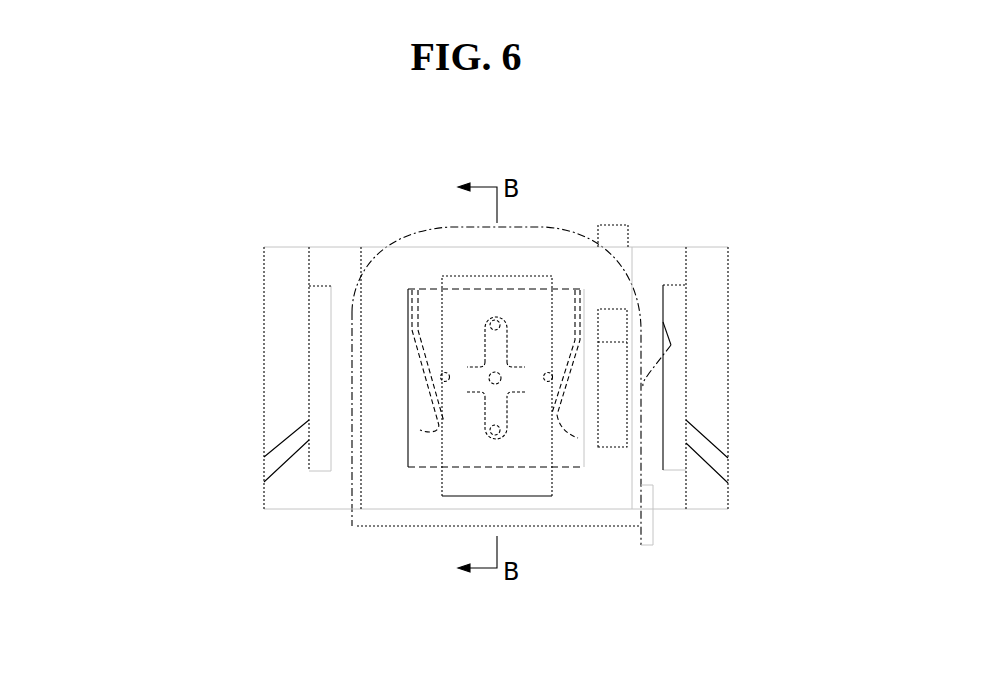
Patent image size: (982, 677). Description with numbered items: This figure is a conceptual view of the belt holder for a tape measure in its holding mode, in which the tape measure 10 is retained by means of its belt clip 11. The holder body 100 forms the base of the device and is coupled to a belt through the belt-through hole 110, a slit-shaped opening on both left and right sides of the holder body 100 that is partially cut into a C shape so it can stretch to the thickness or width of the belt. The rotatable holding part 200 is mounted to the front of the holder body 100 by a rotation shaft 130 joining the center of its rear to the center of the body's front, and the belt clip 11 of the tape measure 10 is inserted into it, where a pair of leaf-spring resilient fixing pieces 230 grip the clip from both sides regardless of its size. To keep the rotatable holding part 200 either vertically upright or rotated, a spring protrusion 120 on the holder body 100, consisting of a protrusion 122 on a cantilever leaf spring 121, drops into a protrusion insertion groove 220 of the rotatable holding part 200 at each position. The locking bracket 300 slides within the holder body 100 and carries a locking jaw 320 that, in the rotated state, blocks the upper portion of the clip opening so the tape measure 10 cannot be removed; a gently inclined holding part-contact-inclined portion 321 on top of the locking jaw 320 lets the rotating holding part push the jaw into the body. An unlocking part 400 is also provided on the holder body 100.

The tape measure 10 is at (552, 540).
The belt clip 11 is at (470, 278).
The holder body 100 is at (336, 240).
The belt-through hole 110 is at (684, 378).
The spring protrusion 120 is at (168, 422).
The leaf spring 121 is at (497, 404).
The protrusion 122 is at (489, 429).
The rotation shaft 130 is at (489, 371).
The rotatable holding part 200 is at (430, 452).
The protrusion insertion groove 220 is at (483, 400).
The resilient fixing piece 230 is at (442, 374).
The locking bracket 300 is at (616, 460).
The locking jaw 320 is at (612, 415).
The holding part-contact-inclined portion 321 is at (615, 325).
The unlocking part 400 is at (612, 235).